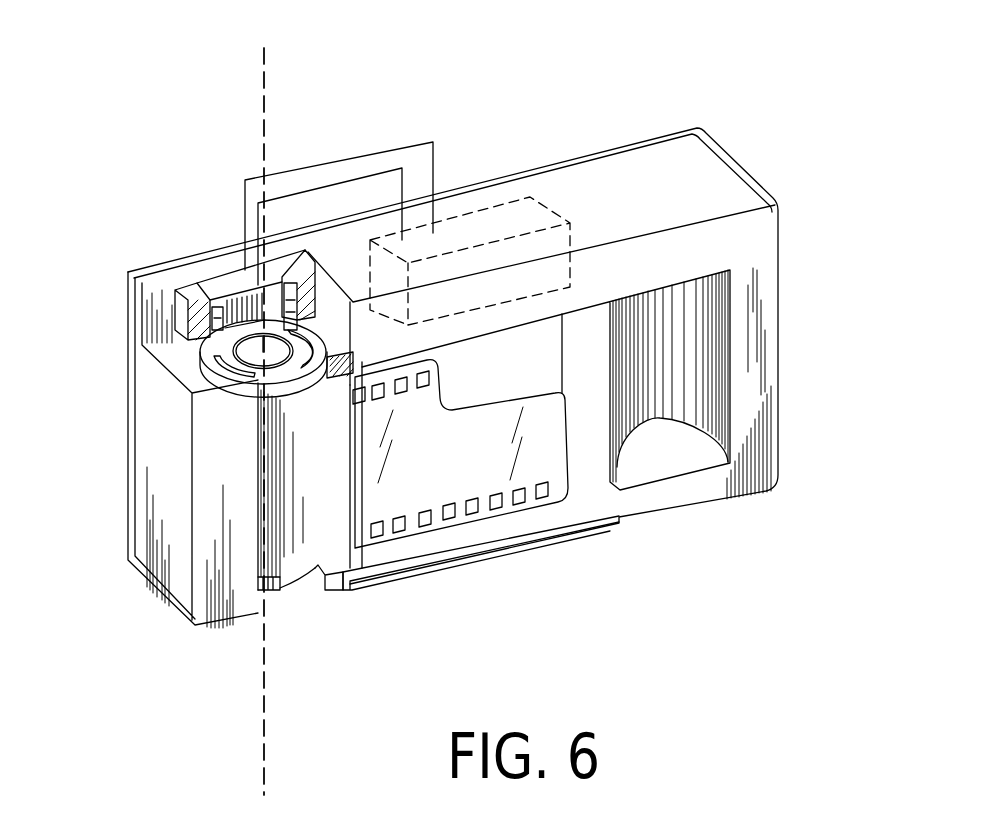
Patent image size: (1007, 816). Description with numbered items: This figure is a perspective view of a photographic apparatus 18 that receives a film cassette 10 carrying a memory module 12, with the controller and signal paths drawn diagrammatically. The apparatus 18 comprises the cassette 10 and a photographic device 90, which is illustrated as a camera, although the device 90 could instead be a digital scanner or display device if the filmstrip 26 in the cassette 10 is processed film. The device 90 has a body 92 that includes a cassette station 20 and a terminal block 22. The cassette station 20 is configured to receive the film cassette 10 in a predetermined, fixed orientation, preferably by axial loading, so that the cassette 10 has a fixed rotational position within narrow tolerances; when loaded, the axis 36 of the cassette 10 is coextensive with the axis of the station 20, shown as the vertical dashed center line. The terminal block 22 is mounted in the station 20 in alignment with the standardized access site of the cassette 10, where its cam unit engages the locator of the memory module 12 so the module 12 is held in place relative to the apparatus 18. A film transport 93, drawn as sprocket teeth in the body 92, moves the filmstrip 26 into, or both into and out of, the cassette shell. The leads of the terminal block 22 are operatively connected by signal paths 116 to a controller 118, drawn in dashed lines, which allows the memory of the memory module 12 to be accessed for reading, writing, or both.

The film cassette 10 is at (273, 552).
The memory module 12 is at (250, 354).
The photographic apparatus 18 is at (882, 189).
The cassette station 20 is at (316, 594).
The terminal block 22 is at (205, 290).
The filmstrip 26 is at (456, 466).
The axis 36 is at (264, 77).
The photographic device 90 is at (128, 468).
The body 92 is at (778, 340).
The film transport 93 is at (383, 527).
The signal paths 116 is at (398, 168).
The controller 118 is at (520, 200).